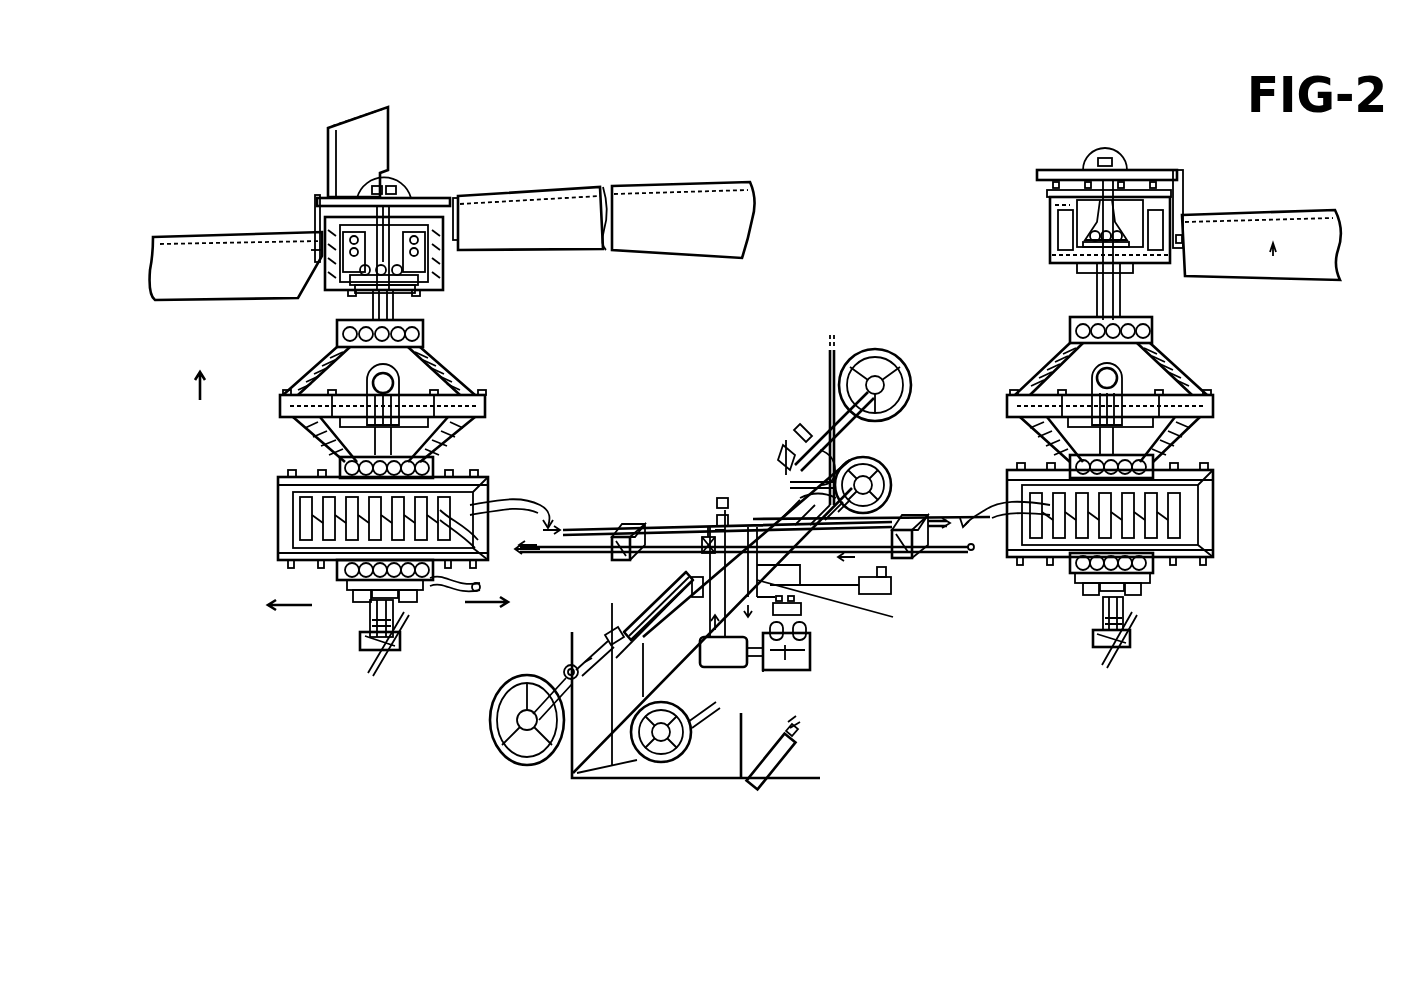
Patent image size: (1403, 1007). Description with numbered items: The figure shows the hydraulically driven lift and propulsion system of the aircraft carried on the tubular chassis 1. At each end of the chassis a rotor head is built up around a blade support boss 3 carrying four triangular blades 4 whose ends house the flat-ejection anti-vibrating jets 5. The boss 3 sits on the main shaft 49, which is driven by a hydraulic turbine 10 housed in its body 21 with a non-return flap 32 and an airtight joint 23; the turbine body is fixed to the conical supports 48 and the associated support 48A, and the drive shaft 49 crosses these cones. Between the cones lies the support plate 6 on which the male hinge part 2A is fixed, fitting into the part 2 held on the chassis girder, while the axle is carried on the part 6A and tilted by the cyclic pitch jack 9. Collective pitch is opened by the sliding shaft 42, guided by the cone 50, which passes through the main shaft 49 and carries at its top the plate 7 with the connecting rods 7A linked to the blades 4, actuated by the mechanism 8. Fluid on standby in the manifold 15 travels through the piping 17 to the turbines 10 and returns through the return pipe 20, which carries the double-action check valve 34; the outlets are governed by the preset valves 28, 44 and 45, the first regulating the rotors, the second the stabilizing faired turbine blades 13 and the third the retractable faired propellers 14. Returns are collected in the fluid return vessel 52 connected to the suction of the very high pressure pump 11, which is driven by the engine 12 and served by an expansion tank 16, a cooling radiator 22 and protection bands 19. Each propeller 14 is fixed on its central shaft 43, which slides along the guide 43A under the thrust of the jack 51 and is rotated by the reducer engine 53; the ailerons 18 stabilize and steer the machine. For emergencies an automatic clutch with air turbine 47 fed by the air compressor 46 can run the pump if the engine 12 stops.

The tubular chassis 1 is at (600, 780).
The rotor support hinge pin 2 is at (398, 378).
The rotor support male part 2A is at (398, 388).
The main rotor boss 3 is at (1052, 243).
The lift blade 4 is at (500, 248).
The anti-vibrating flat ejection jet 5 is at (760, 190).
The support plate 6 is at (470, 410).
The axle support part 6A is at (318, 436).
The connecting rod support plate 7 is at (433, 207).
The connecting rod 7A is at (320, 210).
The collective pitch opening mechanism 8 is at (362, 644).
The cyclic pitch jack 9 is at (482, 586).
The hydraulic drive turbine 10 is at (300, 530).
The very high pressure pump 11 is at (728, 668).
The drive engine 12 is at (812, 650).
The faired turbine blades 13 is at (880, 486).
The retractable faired propeller 14 is at (520, 745).
The manifold 15 is at (688, 580).
The expansion tank 16 is at (878, 588).
The feed piping 17 is at (612, 552).
The stabilizing aileron 18 is at (788, 770).
The protection band 19 is at (604, 655).
The return pipe 20 is at (657, 530).
The turbine body 21 is at (1215, 512).
The cooling radiator 22 is at (620, 530).
The turbine body airtight joint 23 is at (1215, 536).
The rotor outlet valve 28 is at (722, 498).
The non-return flap 32 is at (480, 484).
The double-action check valve 34 is at (845, 470).
The collective pitch shaft 42 is at (372, 632).
The propeller support shaft 43 is at (828, 432).
The shaft guide 43A is at (565, 670).
The preset valve 44 is at (698, 585).
The propeller outlet valve 45 is at (738, 527).
The air compressor 46 is at (802, 609).
The automatic clutch air turbine 47 is at (765, 672).
The conical support 48 is at (310, 365).
The lower support cone 48A is at (1175, 440).
The main shaft 49 is at (1105, 298).
The collective pitch guide cone 50 is at (1102, 218).
The propeller outlet jack 51 is at (676, 585).
The fluid return vessel 52 is at (893, 617).
The reducer engine 53 is at (778, 452).